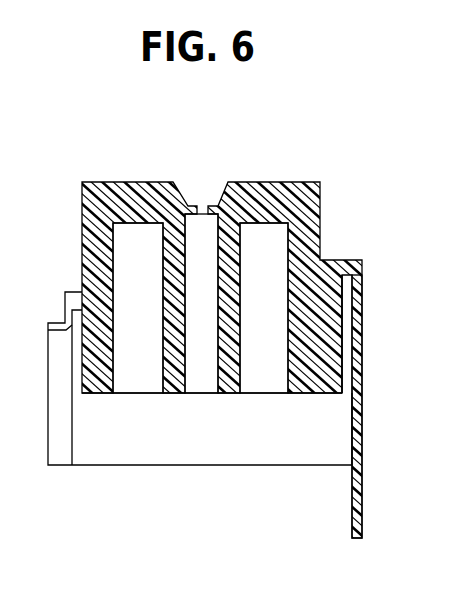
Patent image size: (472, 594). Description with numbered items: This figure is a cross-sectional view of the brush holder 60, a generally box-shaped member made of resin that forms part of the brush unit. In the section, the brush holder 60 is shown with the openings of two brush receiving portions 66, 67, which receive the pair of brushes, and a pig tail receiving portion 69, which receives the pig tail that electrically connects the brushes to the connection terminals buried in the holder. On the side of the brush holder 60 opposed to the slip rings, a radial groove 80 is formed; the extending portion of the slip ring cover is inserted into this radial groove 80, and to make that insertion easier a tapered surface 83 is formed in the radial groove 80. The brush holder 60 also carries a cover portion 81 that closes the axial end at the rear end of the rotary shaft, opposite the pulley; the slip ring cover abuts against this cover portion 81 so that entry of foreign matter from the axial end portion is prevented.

The brush holder 60 is at (374, 285).
The brush receiving portion 66 is at (138, 233).
The brush receiving portion 67 is at (265, 232).
The pig tail receiving portion 69 is at (202, 380).
The radial groove 80 is at (340, 360).
The cover portion 81 is at (360, 463).
The tapered surface 83 is at (339, 393).